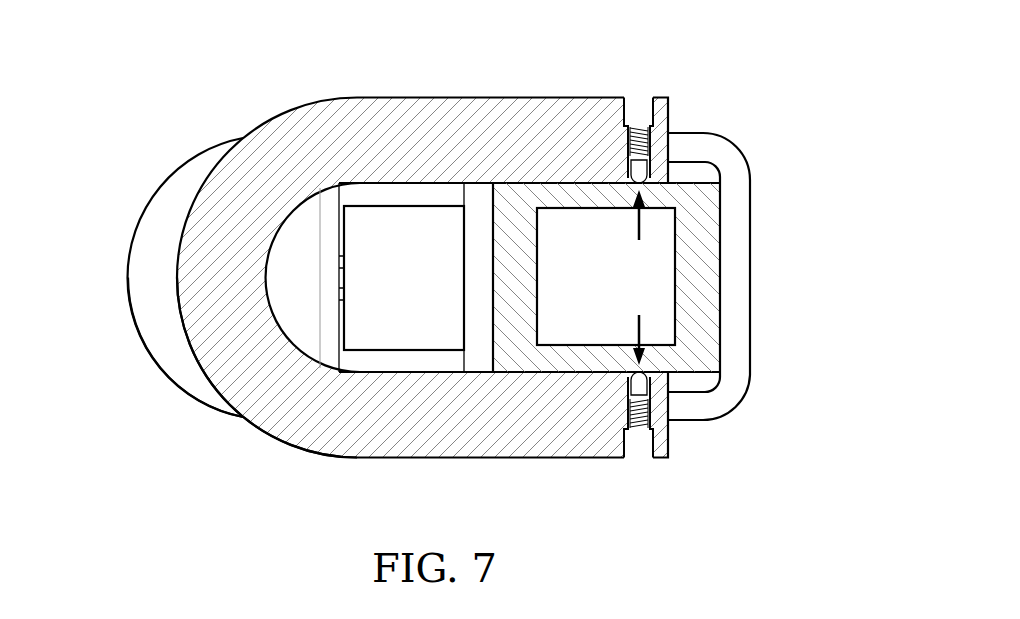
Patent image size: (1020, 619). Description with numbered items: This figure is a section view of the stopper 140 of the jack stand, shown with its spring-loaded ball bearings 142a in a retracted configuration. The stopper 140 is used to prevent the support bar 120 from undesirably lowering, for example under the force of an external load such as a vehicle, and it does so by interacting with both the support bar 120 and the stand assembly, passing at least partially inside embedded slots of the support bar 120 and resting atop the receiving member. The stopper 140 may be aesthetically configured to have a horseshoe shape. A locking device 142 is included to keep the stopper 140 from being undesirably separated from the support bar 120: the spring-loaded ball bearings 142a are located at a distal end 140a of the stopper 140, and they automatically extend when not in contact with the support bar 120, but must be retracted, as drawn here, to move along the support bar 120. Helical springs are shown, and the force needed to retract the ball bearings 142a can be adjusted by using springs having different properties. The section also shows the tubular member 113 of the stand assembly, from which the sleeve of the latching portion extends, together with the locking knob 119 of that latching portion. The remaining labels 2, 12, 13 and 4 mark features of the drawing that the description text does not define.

The stopper 140 is at (329, 86).
The distal end of the stopper 140a is at (649, 72).
The locking device 142 is at (617, 134).
The spring-loaded ball bearings 142a is at (636, 168).
The support bar 120 is at (706, 234).
The inner component 2 is at (703, 272).
The tubular member 113 is at (737, 298).
The sleeve 12 is at (737, 327).
The locking knob 119 is at (148, 247).
The cap 13 is at (140, 320).
The housing lower portion 4 is at (345, 430).